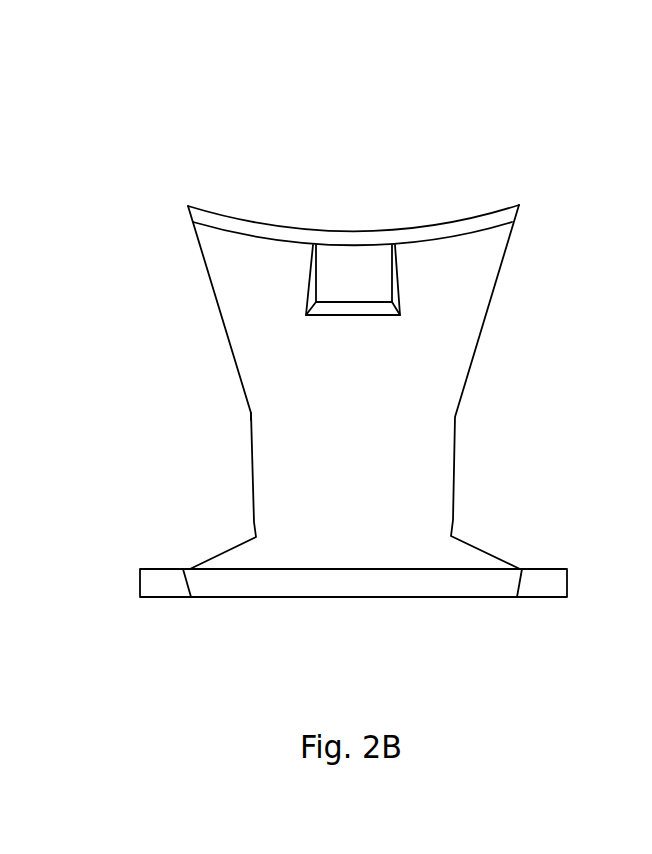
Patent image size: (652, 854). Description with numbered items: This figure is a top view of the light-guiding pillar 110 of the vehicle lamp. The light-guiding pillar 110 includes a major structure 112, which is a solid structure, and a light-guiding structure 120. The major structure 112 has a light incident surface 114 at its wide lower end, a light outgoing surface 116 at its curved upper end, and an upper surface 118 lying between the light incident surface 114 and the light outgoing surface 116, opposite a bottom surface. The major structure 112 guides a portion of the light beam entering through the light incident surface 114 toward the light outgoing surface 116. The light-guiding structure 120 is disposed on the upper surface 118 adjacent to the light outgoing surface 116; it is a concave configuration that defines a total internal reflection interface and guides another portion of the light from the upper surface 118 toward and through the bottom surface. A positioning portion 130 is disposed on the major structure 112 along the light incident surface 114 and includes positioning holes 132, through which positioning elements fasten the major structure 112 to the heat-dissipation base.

The light-guiding pillar 110 is at (80, 39).
The major structure 112 is at (230, 426).
The light incident surface 114 is at (365, 609).
The light outgoing surface 116 is at (238, 221).
The upper surface 118 is at (268, 332).
The light-guiding structure 120 is at (397, 278).
The positioning portion 130 is at (488, 598).
The positioning hole 132 is at (544, 557).